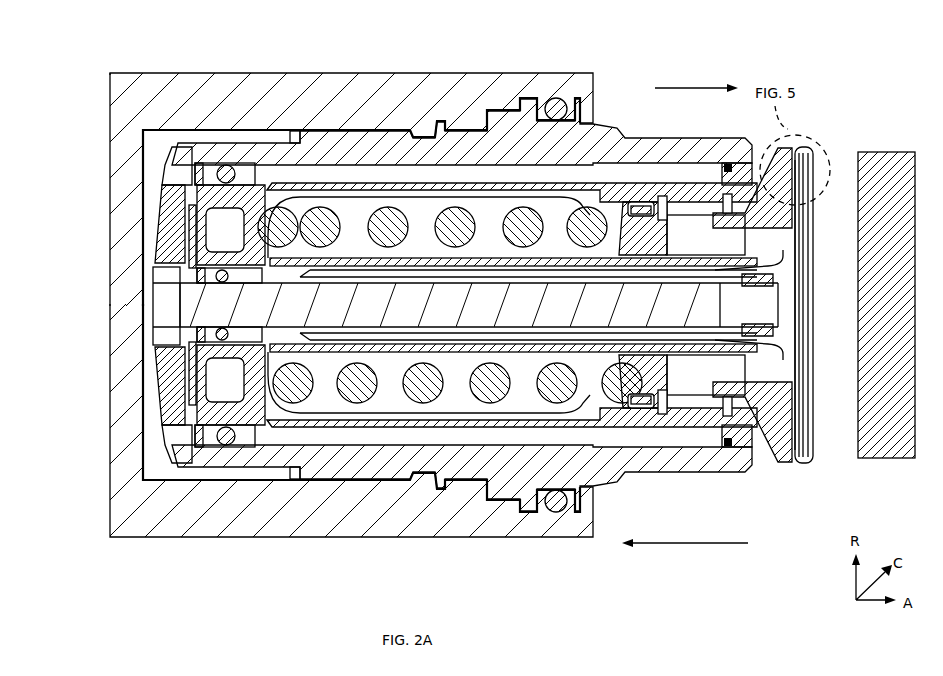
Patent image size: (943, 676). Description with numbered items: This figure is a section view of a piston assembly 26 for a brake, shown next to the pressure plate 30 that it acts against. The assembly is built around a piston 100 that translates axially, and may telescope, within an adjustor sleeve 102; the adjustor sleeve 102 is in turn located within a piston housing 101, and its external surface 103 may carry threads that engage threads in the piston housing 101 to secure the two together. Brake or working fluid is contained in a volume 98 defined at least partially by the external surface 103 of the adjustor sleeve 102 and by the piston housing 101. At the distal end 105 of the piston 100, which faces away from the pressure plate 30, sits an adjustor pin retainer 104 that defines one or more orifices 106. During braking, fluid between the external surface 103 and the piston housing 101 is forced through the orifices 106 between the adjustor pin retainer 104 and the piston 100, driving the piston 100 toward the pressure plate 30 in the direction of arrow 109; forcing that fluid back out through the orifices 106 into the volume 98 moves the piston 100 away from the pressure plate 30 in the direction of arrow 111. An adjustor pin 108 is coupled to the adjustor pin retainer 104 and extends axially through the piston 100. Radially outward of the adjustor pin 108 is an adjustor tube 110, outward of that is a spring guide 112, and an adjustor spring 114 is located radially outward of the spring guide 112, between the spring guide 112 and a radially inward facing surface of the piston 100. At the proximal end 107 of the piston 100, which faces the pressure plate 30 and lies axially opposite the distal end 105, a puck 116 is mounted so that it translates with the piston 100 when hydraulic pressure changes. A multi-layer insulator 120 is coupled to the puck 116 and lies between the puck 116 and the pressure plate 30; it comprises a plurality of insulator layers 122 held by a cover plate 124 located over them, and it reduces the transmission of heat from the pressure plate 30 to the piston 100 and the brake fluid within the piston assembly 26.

The piston assembly 26 is at (72, 68).
The pressure plate 30 is at (893, 160).
The volume 98 is at (173, 132).
The piston 100 is at (630, 195).
The piston housing 101 is at (245, 88).
The adjustor sleeve 102 is at (372, 128).
The external surface 103 is at (300, 138).
The adjustor pin retainer 104 is at (150, 352).
The distal end 105 is at (193, 412).
The orifices 106 is at (170, 170).
The proximal end 107 is at (748, 427).
The adjustor pin 108 is at (165, 295).
The arrow 109 is at (675, 88).
The adjustor tube 110 is at (688, 337).
The arrow 111 is at (702, 544).
The spring guide 112 is at (640, 375).
The adjustor spring 114 is at (603, 378).
The puck 116 is at (778, 448).
The multi-layer insulator 120 is at (821, 202).
The insulator layers 122 is at (797, 447).
The cover plate 124 is at (817, 322).